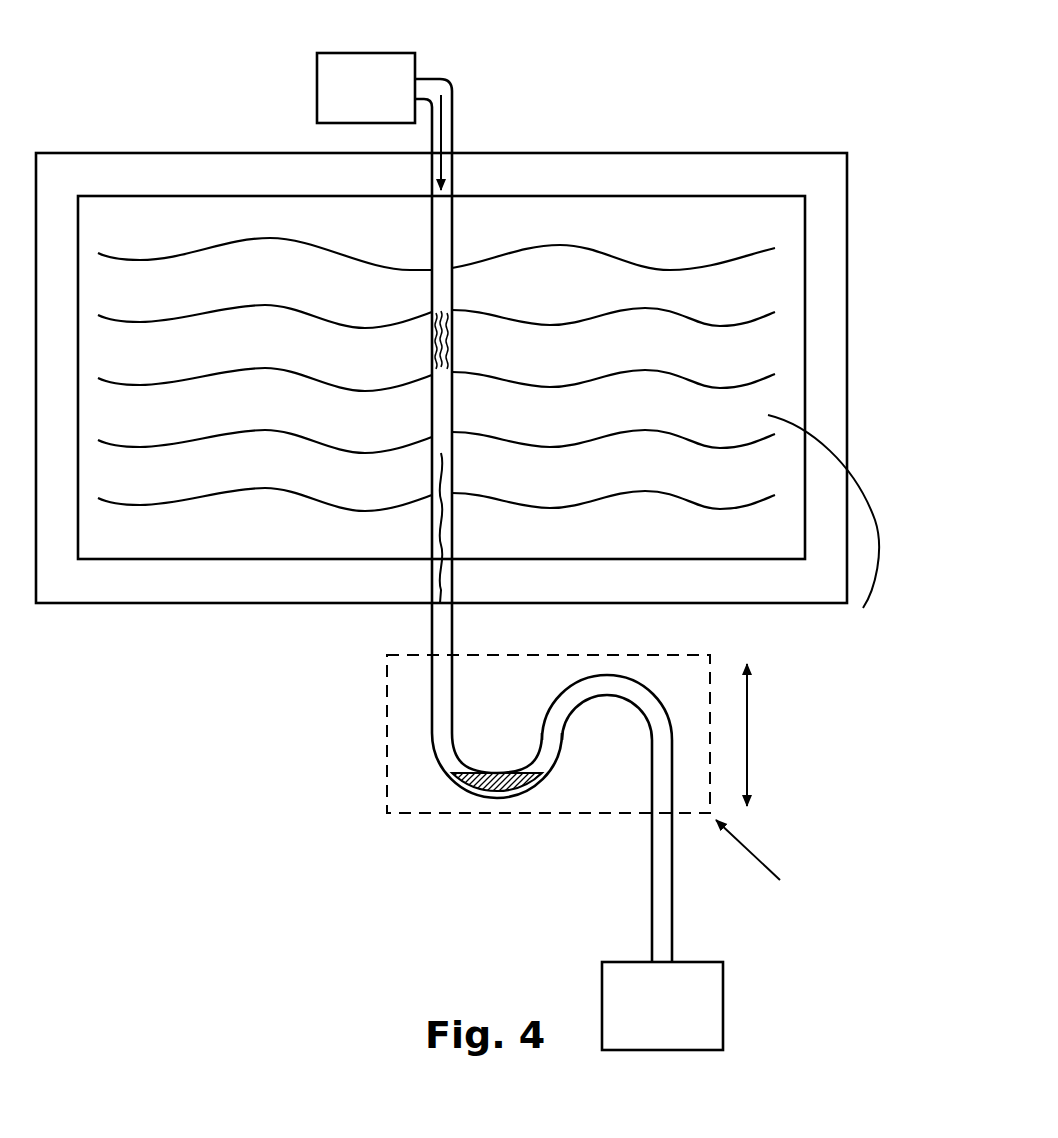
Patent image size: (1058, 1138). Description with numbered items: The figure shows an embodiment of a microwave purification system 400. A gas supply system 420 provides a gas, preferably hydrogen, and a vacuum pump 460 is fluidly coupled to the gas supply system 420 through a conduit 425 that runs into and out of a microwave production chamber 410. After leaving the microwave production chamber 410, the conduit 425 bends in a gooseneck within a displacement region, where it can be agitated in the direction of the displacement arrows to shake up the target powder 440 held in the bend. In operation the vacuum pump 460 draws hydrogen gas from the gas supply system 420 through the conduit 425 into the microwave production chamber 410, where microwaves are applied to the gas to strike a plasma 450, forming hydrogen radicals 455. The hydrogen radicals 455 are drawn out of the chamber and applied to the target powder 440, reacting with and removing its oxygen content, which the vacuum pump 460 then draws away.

The microwave purification system 400 is at (471, 525).
The microwave production chamber 410 is at (712, 153).
The gas supply system 420 is at (317, 88).
The conduit 425 is at (453, 112).
The target powder 440 is at (468, 790).
The plasma 450 is at (431, 339).
The hydrogen radicals 455 is at (435, 539).
The vacuum pump 460 is at (723, 1013).